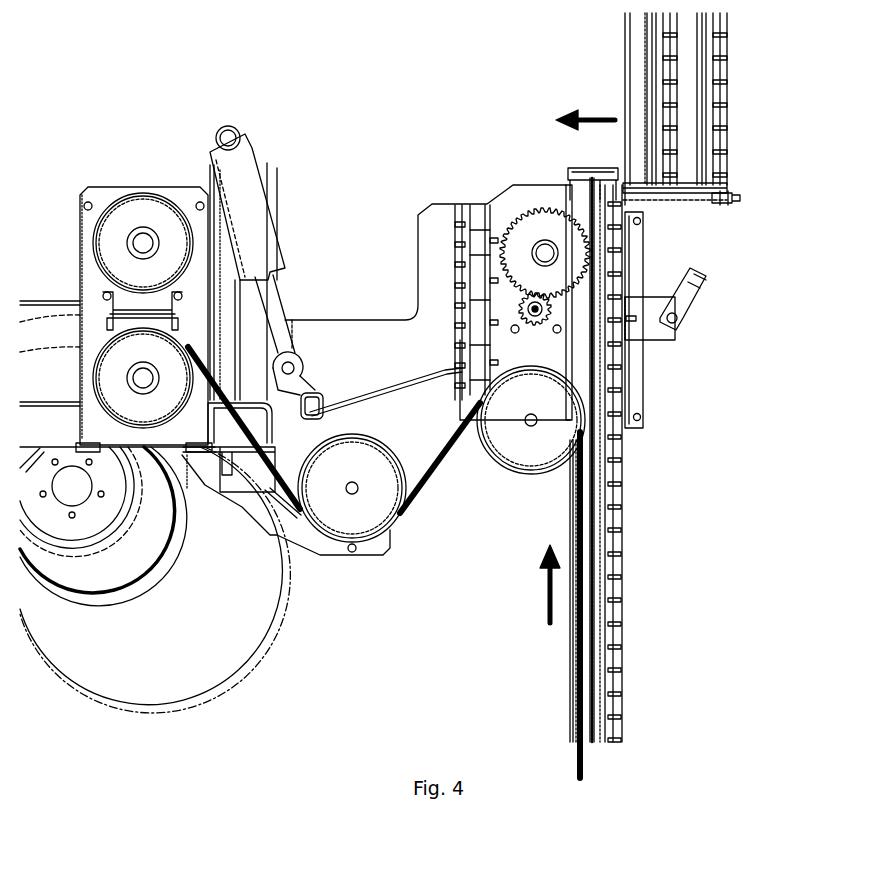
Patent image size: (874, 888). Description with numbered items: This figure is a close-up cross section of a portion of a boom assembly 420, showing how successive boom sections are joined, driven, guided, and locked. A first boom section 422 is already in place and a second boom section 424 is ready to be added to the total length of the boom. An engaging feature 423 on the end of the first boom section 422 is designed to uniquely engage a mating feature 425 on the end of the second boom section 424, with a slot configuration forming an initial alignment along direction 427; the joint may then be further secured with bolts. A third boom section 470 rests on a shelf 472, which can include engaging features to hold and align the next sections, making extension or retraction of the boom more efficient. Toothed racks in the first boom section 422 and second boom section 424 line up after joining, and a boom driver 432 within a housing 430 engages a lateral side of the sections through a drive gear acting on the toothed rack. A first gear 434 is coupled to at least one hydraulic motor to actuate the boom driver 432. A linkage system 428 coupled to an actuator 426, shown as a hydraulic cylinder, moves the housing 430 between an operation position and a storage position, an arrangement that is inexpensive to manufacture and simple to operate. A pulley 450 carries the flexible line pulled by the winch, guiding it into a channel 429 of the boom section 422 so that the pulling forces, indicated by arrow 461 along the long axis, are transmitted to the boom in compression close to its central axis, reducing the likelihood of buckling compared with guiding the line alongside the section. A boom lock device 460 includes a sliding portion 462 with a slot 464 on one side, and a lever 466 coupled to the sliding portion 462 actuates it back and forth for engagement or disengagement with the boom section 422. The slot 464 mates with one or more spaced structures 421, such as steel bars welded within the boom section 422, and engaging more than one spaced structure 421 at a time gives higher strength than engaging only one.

The boom assembly 420 is at (648, 486).
The spaced structures 421 is at (612, 550).
The first boom section 422 is at (603, 656).
The engaging feature 423 is at (592, 166).
The second boom section 424 is at (635, 82).
The mating feature 425 is at (635, 188).
The actuator 426 is at (248, 190).
The direction 427 is at (590, 116).
The linkage system 428 is at (305, 378).
The channel 429 is at (577, 675).
The housing 430 is at (497, 172).
The boom driver 432 is at (525, 232).
The first gear 434 is at (522, 300).
The pulley 450 is at (525, 452).
The boom lock device 460 is at (700, 337).
The arrow 461 is at (545, 593).
The sliding portion 462 is at (648, 328).
The slot 464 is at (630, 320).
The lever 466 is at (693, 290).
The third boom section 470 is at (705, 118).
The shelf 472 is at (670, 240).